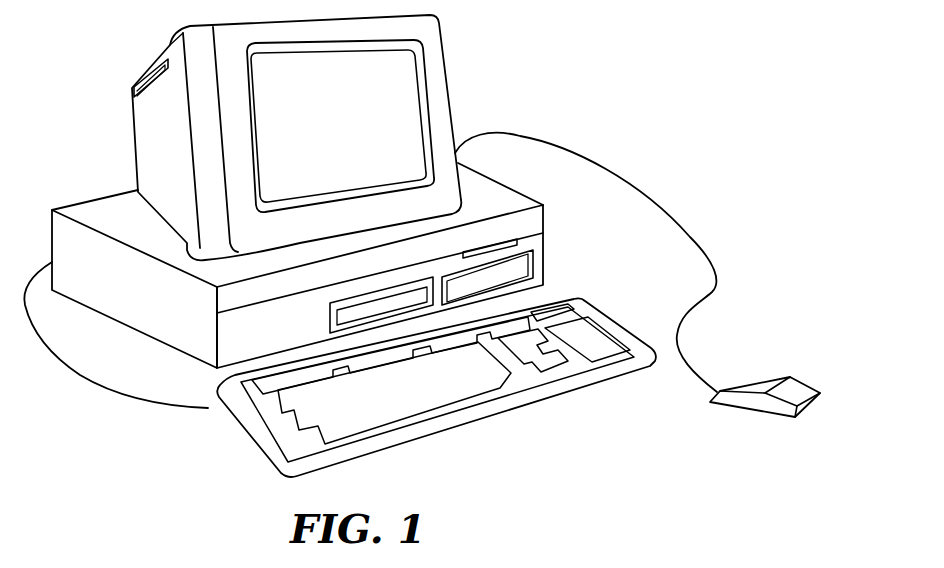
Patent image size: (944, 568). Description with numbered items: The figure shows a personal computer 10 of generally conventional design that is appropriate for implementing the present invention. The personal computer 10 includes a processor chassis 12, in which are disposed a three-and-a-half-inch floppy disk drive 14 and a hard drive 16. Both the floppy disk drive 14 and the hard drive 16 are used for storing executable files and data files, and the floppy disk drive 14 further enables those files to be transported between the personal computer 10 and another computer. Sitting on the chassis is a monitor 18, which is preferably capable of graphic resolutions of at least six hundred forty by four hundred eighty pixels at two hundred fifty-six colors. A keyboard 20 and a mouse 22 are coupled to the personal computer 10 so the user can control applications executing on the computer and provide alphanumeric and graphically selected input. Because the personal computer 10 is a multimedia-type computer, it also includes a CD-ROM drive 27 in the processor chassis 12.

The personal computer 10 is at (450, 446).
The processor chassis 12 is at (527, 243).
The floppy disk drive 14 is at (492, 240).
The hard drive 16 is at (514, 268).
The monitor 18 is at (444, 75).
The keyboard 20 is at (536, 403).
The mouse 22 is at (797, 418).
The CD-ROM drive 27 is at (331, 320).